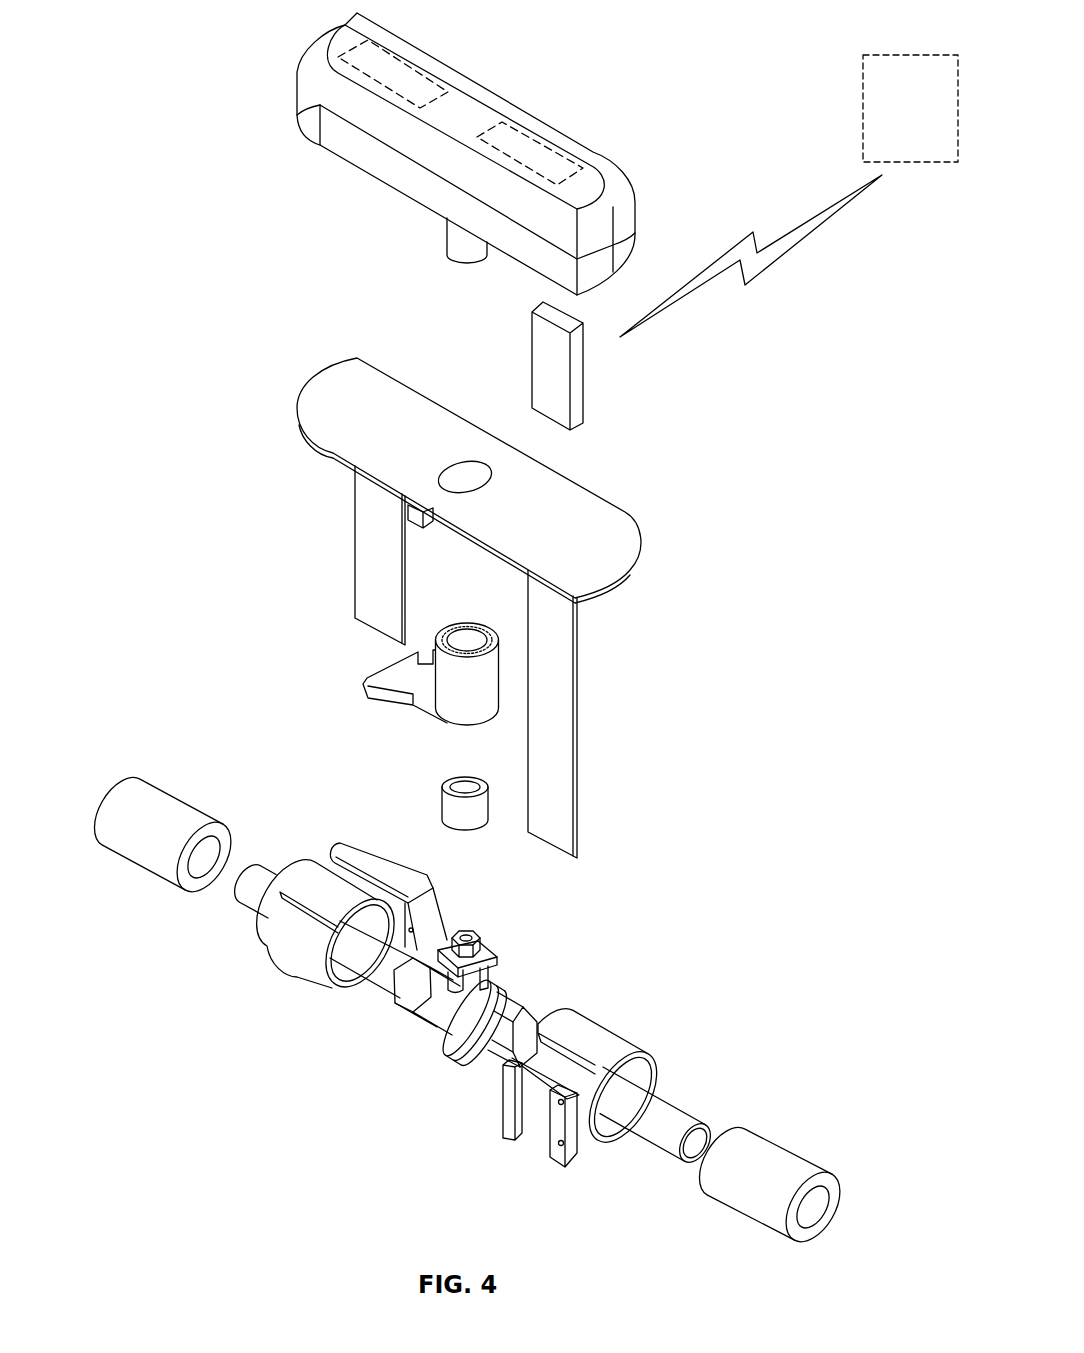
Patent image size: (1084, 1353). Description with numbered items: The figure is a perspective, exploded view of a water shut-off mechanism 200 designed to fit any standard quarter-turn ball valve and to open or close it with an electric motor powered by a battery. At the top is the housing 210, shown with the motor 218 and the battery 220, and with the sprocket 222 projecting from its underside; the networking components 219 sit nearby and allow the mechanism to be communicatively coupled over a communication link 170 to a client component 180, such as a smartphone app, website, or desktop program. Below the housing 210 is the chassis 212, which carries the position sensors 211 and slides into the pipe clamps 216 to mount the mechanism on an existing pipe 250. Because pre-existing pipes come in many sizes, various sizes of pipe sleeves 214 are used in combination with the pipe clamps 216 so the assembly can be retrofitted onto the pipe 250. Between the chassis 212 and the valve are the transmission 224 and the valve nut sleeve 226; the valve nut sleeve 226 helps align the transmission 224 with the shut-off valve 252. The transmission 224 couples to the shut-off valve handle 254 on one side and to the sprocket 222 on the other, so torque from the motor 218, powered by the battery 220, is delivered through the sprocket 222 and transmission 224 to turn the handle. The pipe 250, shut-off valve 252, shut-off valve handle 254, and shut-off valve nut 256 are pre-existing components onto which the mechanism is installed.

The water shut-off mechanism 200 is at (160, 232).
The housing 210 is at (428, 154).
The position sensors 211 is at (418, 528).
The chassis 212 is at (500, 608).
The pipe sleeves 214 is at (137, 852).
The pipe clamps 216 is at (297, 955).
The motor 218 is at (393, 73).
The networking components 219 is at (577, 370).
The battery 220 is at (530, 153).
The sprocket 222 is at (462, 238).
The transmission 224 is at (480, 677).
The valve nut sleeve 226 is at (442, 805).
The pipe 250 is at (668, 1118).
The shut-off valve 252 is at (443, 1005).
The shut-off valve handle 254 is at (398, 880).
The shut-off valve nut 256 is at (473, 930).
The communication link 170 is at (785, 250).
The client component 180 is at (890, 126).